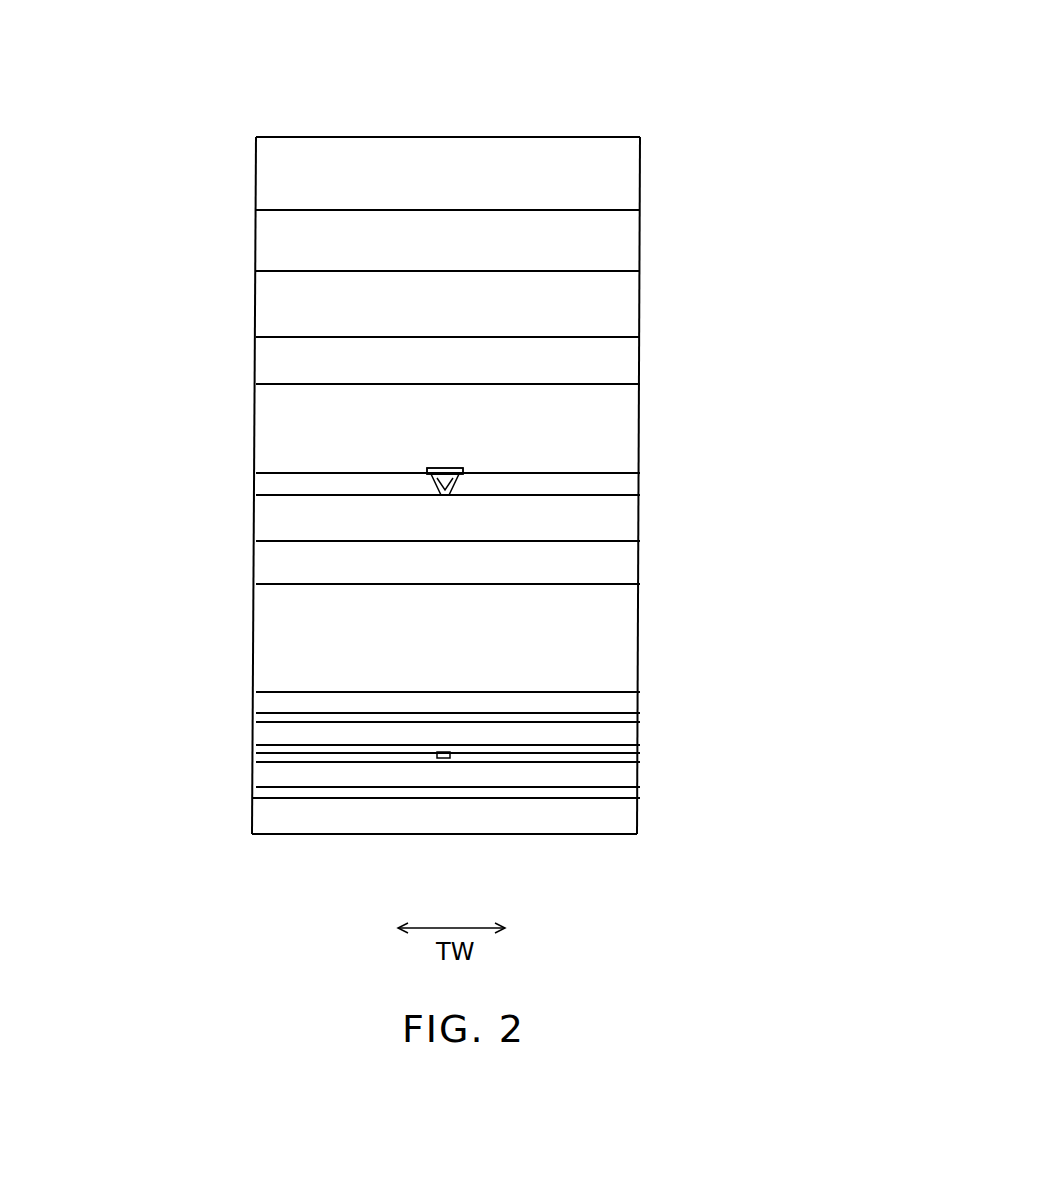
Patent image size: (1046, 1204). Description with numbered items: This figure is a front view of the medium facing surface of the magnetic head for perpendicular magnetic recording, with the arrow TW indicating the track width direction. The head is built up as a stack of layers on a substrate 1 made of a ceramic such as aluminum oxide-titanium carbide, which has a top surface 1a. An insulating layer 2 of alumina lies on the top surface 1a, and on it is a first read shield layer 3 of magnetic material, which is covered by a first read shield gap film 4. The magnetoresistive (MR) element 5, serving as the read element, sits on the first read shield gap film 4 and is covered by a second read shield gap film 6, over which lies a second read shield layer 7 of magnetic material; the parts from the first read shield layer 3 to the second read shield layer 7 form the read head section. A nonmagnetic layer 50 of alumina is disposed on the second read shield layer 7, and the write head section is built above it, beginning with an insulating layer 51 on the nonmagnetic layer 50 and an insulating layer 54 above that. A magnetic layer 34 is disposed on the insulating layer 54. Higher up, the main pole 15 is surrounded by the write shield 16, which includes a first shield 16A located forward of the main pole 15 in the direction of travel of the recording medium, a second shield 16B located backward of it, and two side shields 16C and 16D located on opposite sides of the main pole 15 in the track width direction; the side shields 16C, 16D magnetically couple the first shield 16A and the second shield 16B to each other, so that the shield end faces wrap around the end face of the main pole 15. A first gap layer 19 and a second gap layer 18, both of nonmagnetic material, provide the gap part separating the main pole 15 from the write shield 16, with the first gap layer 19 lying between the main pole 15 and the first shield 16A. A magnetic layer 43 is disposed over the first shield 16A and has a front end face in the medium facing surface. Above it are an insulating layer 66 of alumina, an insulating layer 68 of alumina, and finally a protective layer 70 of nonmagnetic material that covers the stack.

The protective layer 70 is at (400, 143).
The insulating layer 68 is at (634, 240).
The insulating layer 66 is at (633, 295).
The magnetic layer 43 is at (633, 362).
The first shield 16A is at (256, 416).
The side shield 16C is at (256, 487).
The side shield 16D is at (633, 487).
The second shield 16B is at (633, 520).
The write shield 16 is at (551, 487).
The main pole 15 is at (445, 468).
The first gap layer 19 is at (453, 468).
The second gap layer 18 is at (455, 487).
The magnetic layer 34 is at (633, 568).
The insulating layer 54 is at (628, 620).
The insulating layer 51 is at (628, 704).
The nonmagnetic layer 50 is at (633, 722).
The second read shield layer 7 is at (633, 738).
The second read shield gap film 6 is at (633, 752).
The magnetoresistive (MR) element 5 is at (441, 758).
The first read shield gap film 4 is at (633, 762).
The first read shield layer 3 is at (633, 778).
The insulating layer 2 is at (633, 793).
The substrate 1 is at (633, 816).
The top surface 1a is at (253, 797).